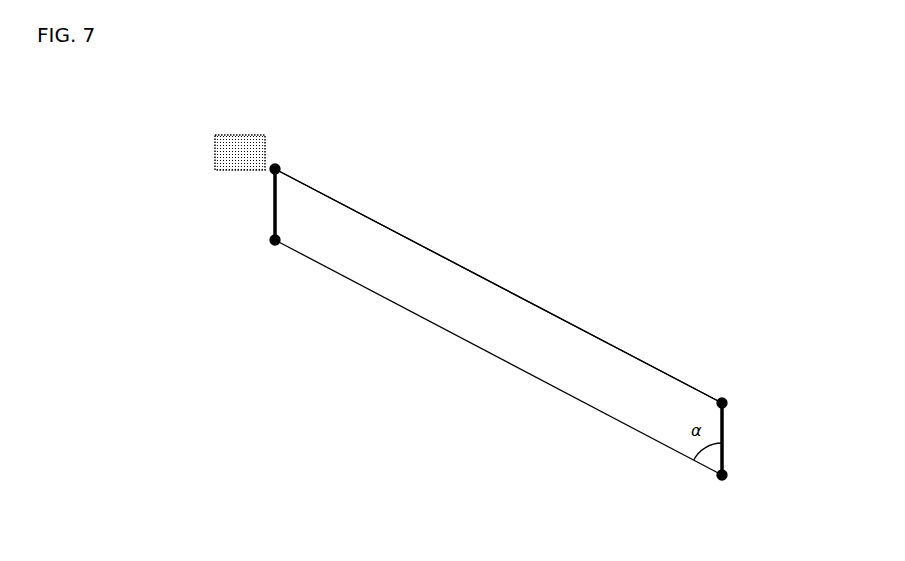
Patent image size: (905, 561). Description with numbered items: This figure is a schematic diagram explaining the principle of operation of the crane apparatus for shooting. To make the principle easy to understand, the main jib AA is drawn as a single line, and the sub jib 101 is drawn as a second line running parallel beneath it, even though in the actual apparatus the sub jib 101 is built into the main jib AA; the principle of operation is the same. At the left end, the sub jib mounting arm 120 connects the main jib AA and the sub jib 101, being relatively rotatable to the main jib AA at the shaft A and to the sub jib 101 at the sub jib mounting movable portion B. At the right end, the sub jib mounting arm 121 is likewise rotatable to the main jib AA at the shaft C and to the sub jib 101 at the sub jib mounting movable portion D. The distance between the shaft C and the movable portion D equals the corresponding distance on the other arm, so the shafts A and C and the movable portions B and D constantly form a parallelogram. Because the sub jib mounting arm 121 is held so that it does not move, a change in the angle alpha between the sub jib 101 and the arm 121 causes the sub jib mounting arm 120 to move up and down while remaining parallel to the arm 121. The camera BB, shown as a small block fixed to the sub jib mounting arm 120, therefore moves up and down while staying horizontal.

The sub jib 101 is at (499, 354).
The sub jib mounting arm 120 is at (265, 205).
The sub jib mounting arm 121 is at (725, 438).
The camera BB is at (232, 135).
The main jib AA is at (510, 290).
The shaft A is at (278, 167).
The sub jib mounting movable portion B is at (275, 243).
The shaft C is at (726, 400).
The sub jib mounting movable portion D is at (720, 478).